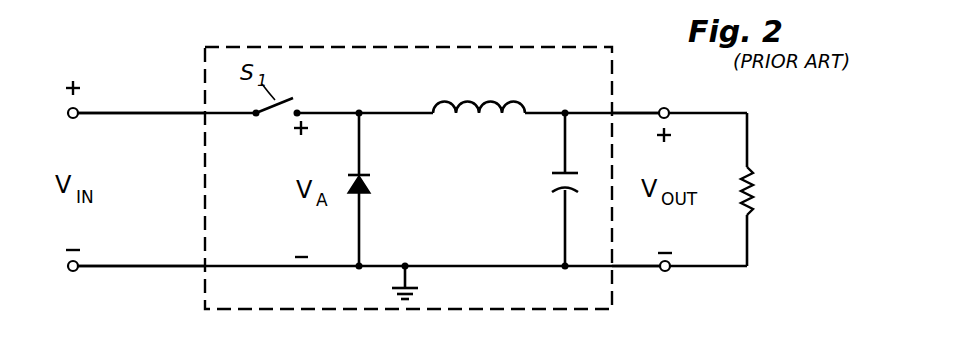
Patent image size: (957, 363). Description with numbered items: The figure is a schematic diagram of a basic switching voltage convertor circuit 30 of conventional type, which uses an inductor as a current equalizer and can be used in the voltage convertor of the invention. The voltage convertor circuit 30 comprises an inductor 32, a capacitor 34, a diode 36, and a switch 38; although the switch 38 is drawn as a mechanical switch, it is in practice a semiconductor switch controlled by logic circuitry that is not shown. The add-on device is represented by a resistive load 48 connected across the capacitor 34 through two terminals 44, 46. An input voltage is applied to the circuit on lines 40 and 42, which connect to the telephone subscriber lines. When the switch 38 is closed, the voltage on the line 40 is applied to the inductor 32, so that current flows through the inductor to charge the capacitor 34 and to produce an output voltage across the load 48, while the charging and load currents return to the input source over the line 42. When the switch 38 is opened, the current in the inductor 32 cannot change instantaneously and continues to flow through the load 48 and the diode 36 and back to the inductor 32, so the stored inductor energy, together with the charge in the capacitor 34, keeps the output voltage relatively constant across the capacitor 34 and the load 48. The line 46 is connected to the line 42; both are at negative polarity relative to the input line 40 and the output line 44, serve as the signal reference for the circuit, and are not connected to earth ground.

The voltage convertor circuit 30 is at (527, 310).
The inductor 32 is at (488, 100).
The capacitor 34 is at (552, 180).
The diode 36 is at (372, 185).
The switch 38 is at (298, 104).
The line 40 is at (143, 110).
The line 42 is at (133, 268).
The terminal 44 is at (640, 110).
The terminal 46 is at (635, 268).
The resistive load 48 is at (754, 190).